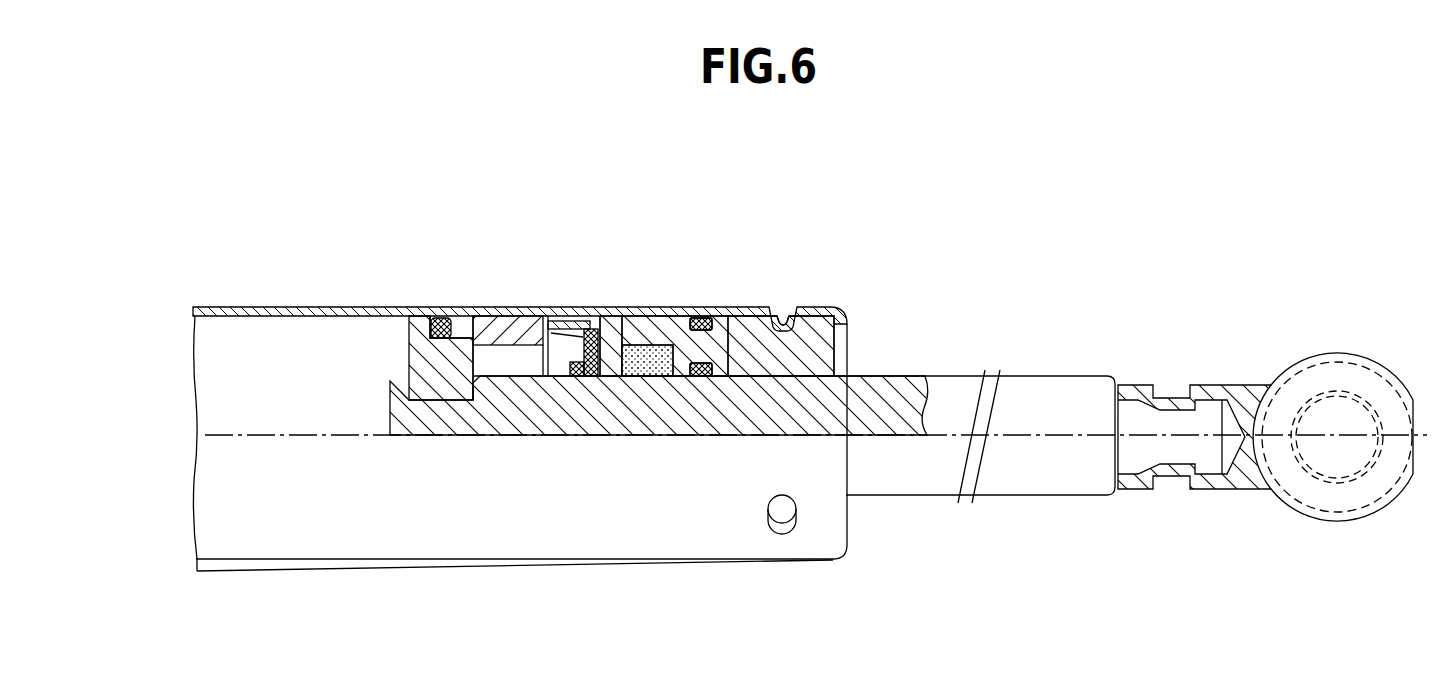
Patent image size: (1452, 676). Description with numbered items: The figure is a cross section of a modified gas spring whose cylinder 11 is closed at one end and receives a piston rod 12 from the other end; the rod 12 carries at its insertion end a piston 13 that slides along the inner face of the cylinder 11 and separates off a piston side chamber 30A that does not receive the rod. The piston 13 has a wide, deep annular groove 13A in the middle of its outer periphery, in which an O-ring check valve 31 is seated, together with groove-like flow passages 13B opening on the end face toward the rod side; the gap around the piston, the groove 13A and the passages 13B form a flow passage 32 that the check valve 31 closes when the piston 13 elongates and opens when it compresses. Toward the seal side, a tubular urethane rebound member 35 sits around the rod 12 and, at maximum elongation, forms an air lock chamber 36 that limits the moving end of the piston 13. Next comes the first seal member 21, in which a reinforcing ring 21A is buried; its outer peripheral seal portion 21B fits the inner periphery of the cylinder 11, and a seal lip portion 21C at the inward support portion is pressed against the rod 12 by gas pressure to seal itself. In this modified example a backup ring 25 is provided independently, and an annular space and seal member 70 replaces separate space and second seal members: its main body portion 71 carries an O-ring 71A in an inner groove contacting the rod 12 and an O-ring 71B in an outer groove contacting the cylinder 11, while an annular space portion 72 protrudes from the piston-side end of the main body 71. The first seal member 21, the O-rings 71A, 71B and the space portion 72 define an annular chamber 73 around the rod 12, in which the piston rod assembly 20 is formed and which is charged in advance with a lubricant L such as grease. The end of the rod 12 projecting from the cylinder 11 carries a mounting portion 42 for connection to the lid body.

The cylinder 11 is at (265, 307).
The piston side chamber 30A is at (232, 317).
The piston 13 is at (425, 356).
The annular groove 13A is at (440, 318).
The check valve 31 is at (450, 322).
The flow passage 13B is at (468, 328).
The flow passage 32 is at (460, 337).
The rebound member 35 is at (512, 323).
The air lock chamber 36 is at (497, 362).
The first seal member 21 is at (569, 352).
The outer peripheral seal portion 21B is at (562, 321).
The reinforcing ring 21A is at (560, 340).
The seal lip portion 21C is at (580, 372).
The backup ring 25 is at (596, 378).
The annular space and seal member 70 is at (717, 357).
The annular space portion 72 is at (647, 330).
The annular chamber 73 is at (652, 373).
The lubricant L is at (641, 377).
The main body portion 71 is at (723, 330).
The O-ring 71A is at (702, 374).
The O-ring 71B is at (706, 322).
The piston rod assembly 20 is at (887, 372).
The piston rod 12 is at (1048, 376).
The mounting portion 42 is at (1372, 353).